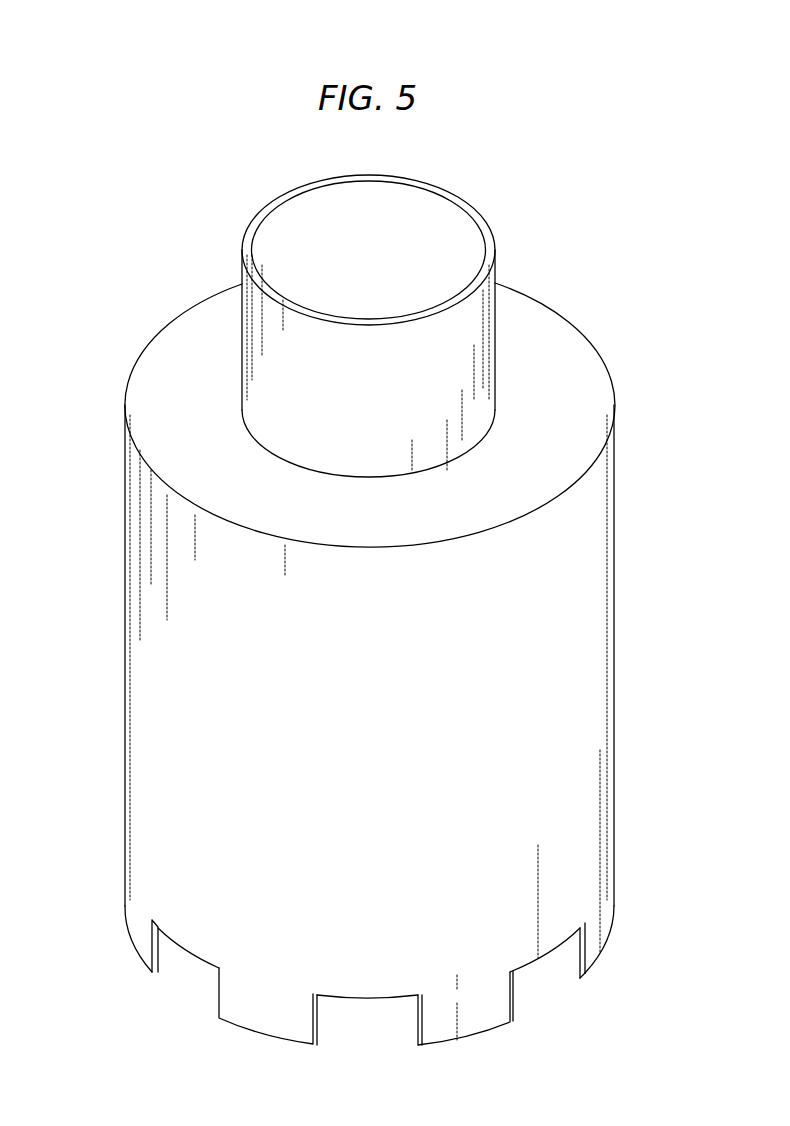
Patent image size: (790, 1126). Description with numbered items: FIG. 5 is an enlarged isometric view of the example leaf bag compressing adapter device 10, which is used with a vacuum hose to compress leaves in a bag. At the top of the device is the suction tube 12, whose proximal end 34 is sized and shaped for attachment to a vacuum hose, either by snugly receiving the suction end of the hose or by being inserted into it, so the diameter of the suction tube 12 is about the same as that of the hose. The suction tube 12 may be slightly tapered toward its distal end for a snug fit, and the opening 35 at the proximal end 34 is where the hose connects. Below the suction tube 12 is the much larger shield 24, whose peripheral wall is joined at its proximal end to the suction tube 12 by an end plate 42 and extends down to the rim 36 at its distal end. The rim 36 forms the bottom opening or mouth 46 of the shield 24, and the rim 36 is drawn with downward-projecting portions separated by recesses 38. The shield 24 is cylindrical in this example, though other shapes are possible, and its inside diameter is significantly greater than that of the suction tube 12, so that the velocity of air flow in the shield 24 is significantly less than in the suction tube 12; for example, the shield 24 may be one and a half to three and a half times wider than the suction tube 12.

The compressing adapter device 10 is at (125, 320).
The suction tube 12 is at (242, 323).
The shield 24 is at (123, 625).
The proximal end 34 is at (242, 246).
The opening 35 is at (460, 241).
The rim 36 is at (263, 1037).
The slots 38 is at (197, 955).
The end plate 42 is at (573, 407).
The mouth 46 is at (579, 962).